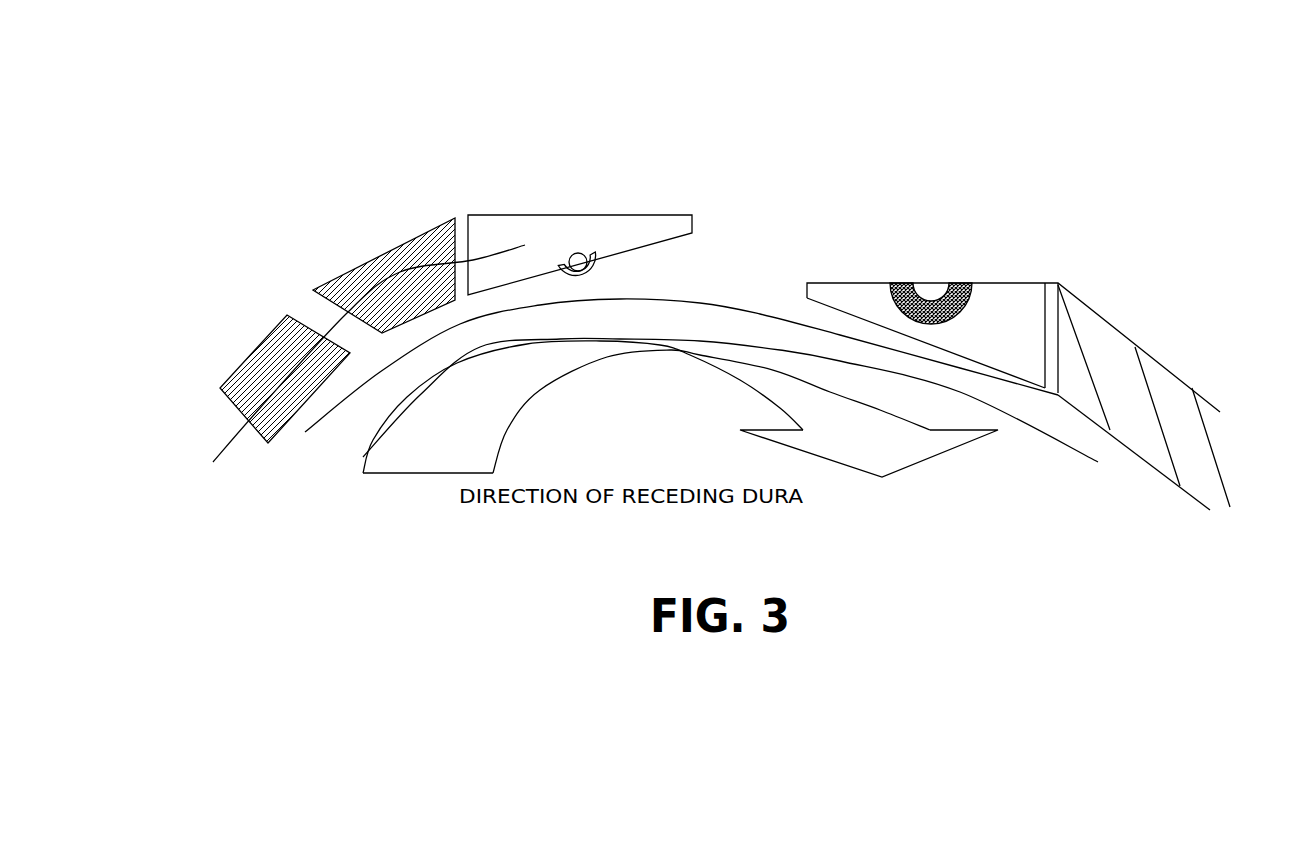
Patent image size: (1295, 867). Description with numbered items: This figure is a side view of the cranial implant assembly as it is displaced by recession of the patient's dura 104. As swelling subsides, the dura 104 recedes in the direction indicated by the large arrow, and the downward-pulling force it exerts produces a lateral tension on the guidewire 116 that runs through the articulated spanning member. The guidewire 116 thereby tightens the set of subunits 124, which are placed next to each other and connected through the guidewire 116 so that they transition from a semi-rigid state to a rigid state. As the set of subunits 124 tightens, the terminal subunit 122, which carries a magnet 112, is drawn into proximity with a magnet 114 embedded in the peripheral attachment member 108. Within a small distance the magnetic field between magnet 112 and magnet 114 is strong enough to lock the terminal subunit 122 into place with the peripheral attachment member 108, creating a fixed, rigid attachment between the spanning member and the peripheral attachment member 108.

The dura 104 is at (1050, 440).
The peripheral attachment member 108 is at (1148, 208).
The magnet 112 is at (582, 247).
The magnet 114 is at (927, 292).
The guidewire 116 is at (327, 323).
The terminal subunit 122 is at (519, 233).
The set of subunits 124 is at (380, 257).